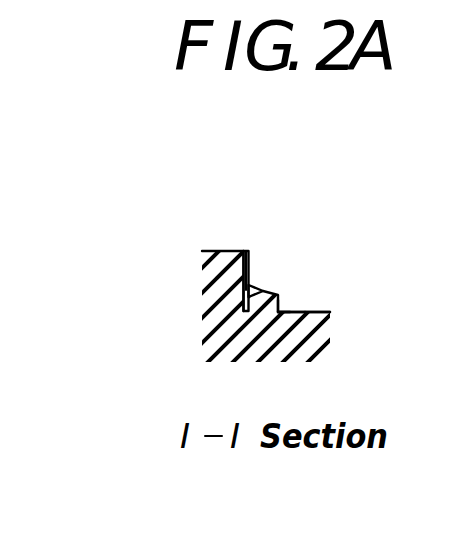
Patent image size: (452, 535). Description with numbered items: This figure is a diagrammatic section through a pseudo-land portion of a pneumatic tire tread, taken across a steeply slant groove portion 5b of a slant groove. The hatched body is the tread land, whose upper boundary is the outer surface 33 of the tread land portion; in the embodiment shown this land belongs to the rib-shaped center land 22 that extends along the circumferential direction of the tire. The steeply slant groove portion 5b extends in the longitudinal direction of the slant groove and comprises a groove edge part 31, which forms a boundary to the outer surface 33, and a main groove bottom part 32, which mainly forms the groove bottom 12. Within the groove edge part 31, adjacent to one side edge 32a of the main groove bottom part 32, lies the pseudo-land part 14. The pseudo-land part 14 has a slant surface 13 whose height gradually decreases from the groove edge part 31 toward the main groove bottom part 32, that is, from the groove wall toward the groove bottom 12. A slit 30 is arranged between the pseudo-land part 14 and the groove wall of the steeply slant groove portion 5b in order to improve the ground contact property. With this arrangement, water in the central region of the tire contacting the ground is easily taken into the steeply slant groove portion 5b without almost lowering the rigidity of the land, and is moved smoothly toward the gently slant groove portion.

The outer surface of tread land portion 33 is at (210, 250).
The rib-shaped center land 22 is at (220, 250).
The groove edge part 31 is at (242, 250).
The slit 30 is at (247, 250).
The slant surface 13 is at (263, 290).
The pseudo-land part 14 is at (278, 285).
The steeply slant groove portion 5b is at (300, 280).
The main groove bottom part 32 is at (310, 312).
The groove bottom 12 is at (320, 307).
The side edge of main groove bottom part 32a is at (282, 310).